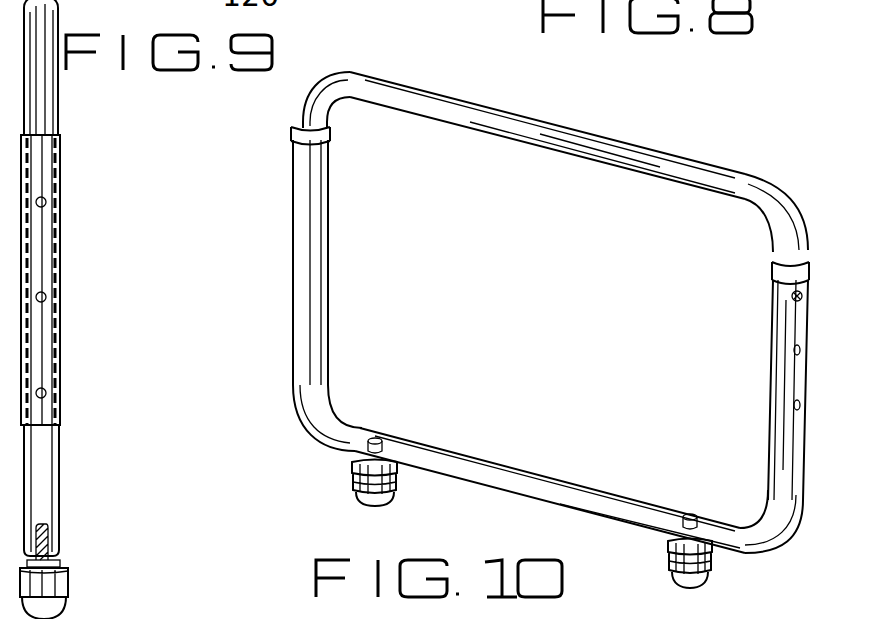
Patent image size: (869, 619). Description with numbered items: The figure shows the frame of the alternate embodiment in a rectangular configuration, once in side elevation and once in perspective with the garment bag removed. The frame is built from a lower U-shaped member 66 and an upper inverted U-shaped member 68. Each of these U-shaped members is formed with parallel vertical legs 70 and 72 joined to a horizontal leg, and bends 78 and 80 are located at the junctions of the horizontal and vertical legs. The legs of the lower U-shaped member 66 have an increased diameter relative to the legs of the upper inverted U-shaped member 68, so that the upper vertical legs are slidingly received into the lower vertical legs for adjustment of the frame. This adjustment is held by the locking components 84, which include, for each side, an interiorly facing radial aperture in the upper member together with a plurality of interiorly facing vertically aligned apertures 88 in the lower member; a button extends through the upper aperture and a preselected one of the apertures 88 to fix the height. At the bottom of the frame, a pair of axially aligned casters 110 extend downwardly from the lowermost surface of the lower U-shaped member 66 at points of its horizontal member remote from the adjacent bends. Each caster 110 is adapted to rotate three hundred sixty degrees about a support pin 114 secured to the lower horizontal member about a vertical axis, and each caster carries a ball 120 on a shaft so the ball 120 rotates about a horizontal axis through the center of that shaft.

In FIG. 9, the lower U-shaped member 66 is at (57, 466).
In FIG. 10, the lower U-shaped member 66 is at (548, 500).
In FIG. 9, the upper inverted U-shaped member 68 is at (51, 4).
In FIG. 10, the upper inverted U-shaped member 68 is at (728, 172).
In FIG. 10, the vertical leg 70 is at (292, 386).
In FIG. 10, the vertical leg 72 is at (303, 128).
In FIG. 10, the bend 78 is at (382, 74).
In FIG. 10, the bend 80 is at (316, 412).
In FIG. 10, the locking components 84 is at (803, 297).
In FIG. 10, the apertures 88 is at (806, 398).
In FIG. 10, the caster 110 is at (376, 503).
In FIG. 10, the support pin 114 is at (346, 449).
In FIG. 10, the ball 120 is at (360, 497).